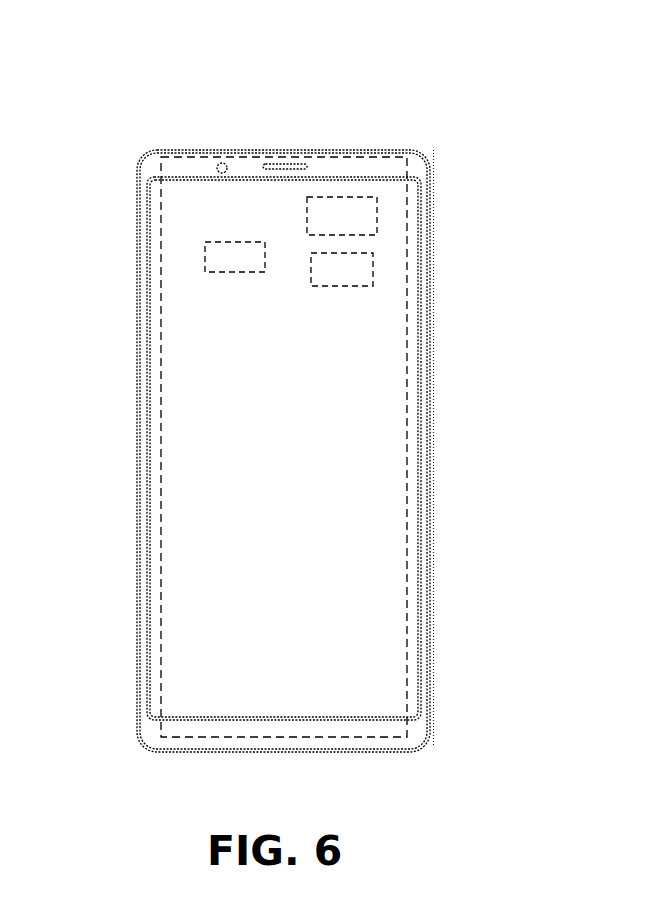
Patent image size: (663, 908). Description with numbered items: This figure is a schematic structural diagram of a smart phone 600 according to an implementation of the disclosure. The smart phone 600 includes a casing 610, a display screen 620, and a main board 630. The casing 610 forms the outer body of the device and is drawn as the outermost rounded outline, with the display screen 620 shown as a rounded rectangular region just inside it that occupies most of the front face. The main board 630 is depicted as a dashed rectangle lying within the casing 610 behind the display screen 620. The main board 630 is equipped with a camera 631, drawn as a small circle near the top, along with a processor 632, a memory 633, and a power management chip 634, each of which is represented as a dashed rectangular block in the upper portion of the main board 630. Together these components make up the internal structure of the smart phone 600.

The smart phone 600 is at (328, 72).
The casing 610 is at (418, 153).
The display screen 620 is at (412, 402).
The main board 630 is at (412, 513).
The camera 631 is at (218, 164).
The processor 632 is at (377, 222).
The memory 633 is at (373, 270).
The power management chip 634 is at (204, 250).